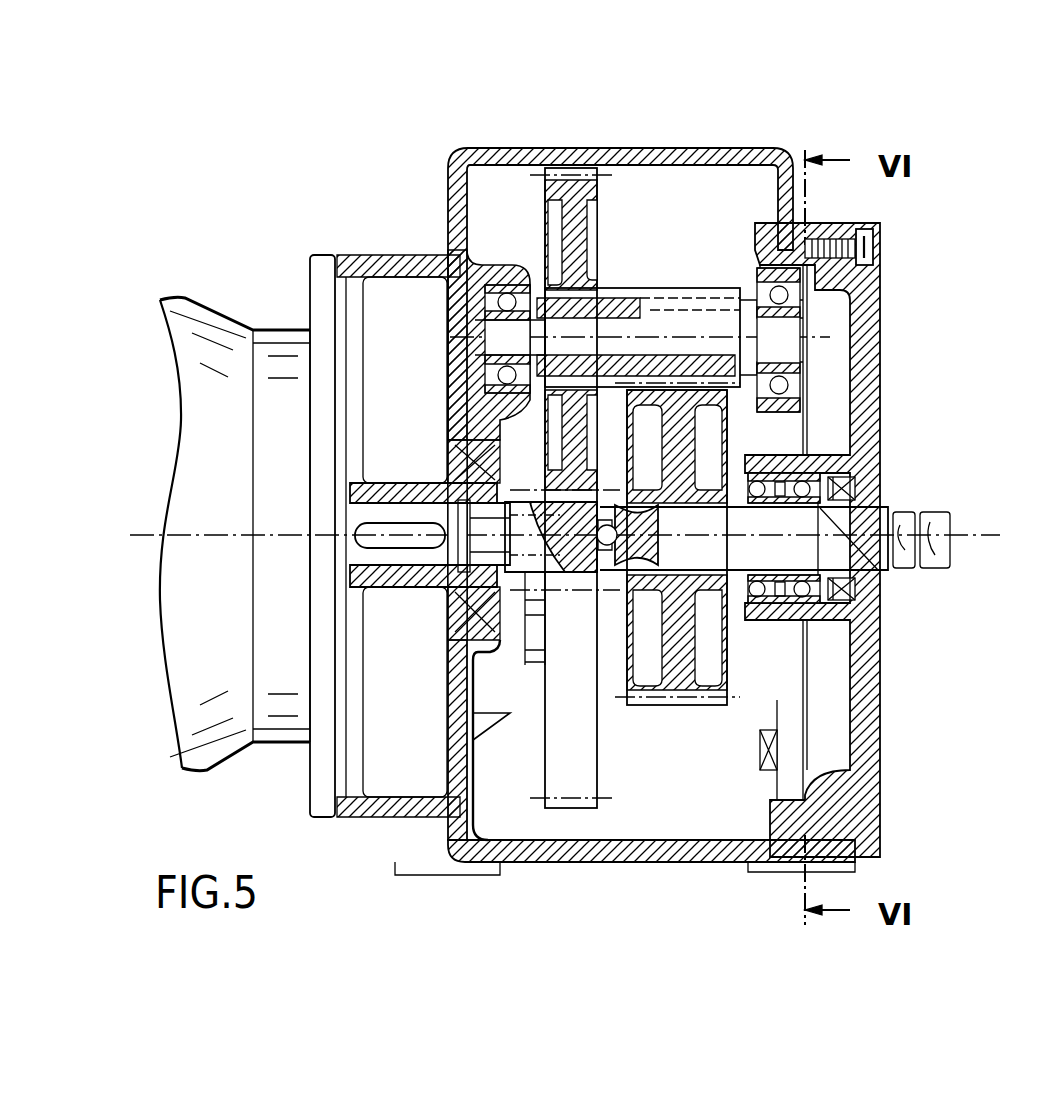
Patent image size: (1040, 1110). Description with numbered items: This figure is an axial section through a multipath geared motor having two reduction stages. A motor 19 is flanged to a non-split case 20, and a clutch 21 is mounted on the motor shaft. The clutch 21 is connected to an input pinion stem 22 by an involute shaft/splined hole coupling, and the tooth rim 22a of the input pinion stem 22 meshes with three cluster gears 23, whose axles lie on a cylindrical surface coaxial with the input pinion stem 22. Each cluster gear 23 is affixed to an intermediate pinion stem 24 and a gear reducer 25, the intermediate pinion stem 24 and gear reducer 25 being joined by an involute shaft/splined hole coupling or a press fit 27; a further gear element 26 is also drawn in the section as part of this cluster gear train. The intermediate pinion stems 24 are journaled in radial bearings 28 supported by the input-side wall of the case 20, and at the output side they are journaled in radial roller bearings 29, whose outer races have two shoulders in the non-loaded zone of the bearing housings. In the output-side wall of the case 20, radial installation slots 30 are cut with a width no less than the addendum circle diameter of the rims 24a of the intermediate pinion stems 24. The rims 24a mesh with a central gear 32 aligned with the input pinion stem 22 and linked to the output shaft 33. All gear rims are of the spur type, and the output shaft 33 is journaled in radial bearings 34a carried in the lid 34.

The motor 19 is at (273, 345).
The non-split case 20 is at (350, 258).
The clutch 21 is at (380, 483).
The input pinion stem 22 is at (453, 567).
The tooth rim 22a is at (516, 500).
The cluster gears 23 is at (445, 268).
The intermediate pinion stem 24 is at (548, 283).
The rims of the intermediate pinion stem 24a is at (717, 282).
The gear reducer 25 is at (600, 210).
The gear 26 is at (610, 300).
The press fit 27 is at (573, 340).
The radial bearings 28 is at (460, 368).
The radial roller bearings 29 is at (790, 382).
The radial installation slots 30 is at (807, 433).
The central gear 32 is at (865, 458).
The output shaft 33 is at (862, 522).
The lid 34 is at (867, 690).
The radial bearings 34a is at (877, 577).